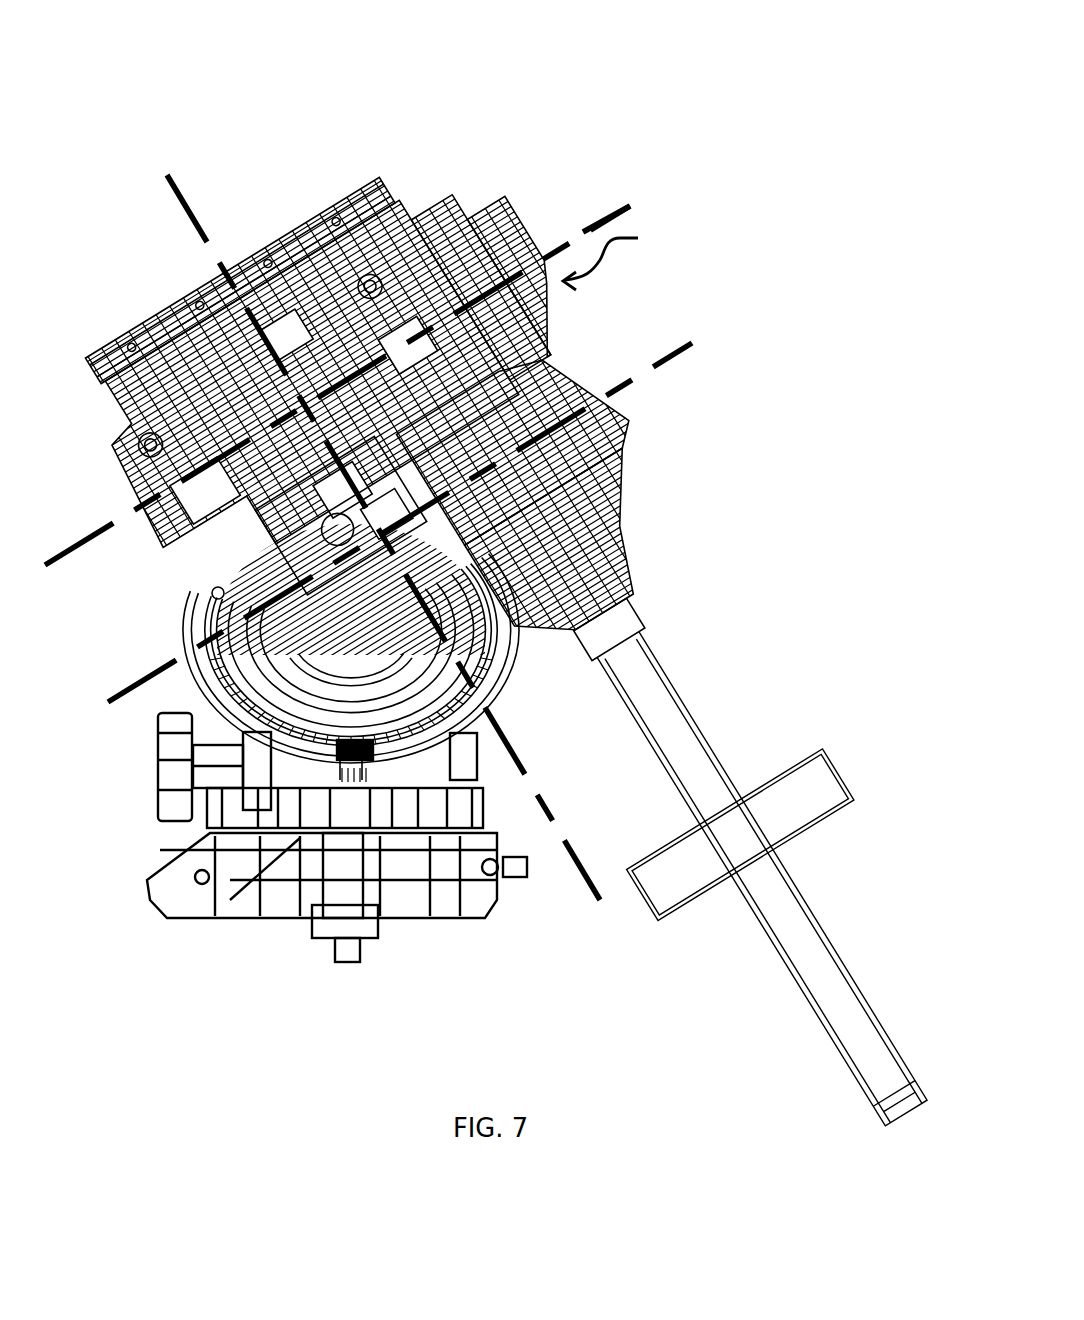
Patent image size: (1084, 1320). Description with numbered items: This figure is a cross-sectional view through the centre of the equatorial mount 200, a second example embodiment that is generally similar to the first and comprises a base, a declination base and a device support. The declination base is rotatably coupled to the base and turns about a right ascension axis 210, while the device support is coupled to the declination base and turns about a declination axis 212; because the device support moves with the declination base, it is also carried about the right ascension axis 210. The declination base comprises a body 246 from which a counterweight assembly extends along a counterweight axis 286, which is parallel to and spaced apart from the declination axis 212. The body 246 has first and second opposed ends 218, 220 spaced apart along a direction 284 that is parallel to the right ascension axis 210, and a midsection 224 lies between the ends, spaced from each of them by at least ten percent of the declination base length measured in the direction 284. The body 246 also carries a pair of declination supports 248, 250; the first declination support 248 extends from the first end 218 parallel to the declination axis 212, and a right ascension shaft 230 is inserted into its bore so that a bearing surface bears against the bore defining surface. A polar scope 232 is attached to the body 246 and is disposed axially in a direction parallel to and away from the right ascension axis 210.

The equatorial mount 200 is at (130, 113).
The right ascension axis 210 is at (675, 353).
The declination axis 212 is at (190, 200).
The first end 218 is at (624, 256).
The second end 220 is at (124, 494).
The midsection 224 is at (335, 512).
The right ascension shaft 230 is at (510, 456).
The polar scope 232 is at (508, 232).
The body 246 is at (470, 240).
The first declination support 248 is at (540, 478).
The second declination support 250 is at (293, 533).
The direction 284 is at (630, 210).
The counterweight axis 286 is at (593, 603).